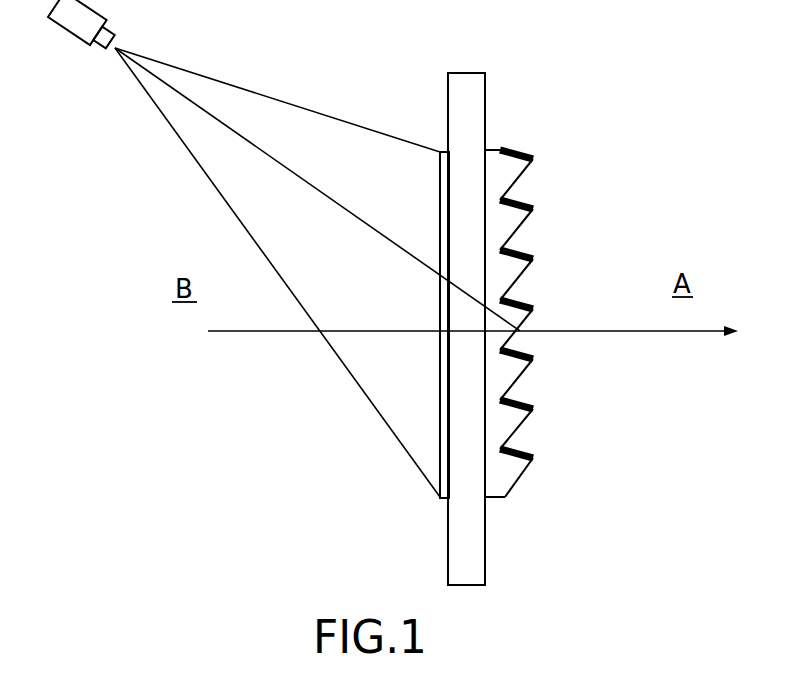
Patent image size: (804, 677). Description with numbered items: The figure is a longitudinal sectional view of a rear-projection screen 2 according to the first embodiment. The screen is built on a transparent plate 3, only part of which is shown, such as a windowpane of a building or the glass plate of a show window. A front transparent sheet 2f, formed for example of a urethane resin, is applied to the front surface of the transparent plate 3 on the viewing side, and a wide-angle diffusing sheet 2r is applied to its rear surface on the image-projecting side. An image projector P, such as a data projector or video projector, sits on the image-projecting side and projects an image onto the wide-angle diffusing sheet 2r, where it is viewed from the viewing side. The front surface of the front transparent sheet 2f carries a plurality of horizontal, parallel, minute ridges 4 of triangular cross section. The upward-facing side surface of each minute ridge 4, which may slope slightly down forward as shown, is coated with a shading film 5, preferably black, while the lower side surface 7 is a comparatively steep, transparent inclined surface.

The image projector P is at (68, 25).
The rear-projection screen 2 is at (501, 302).
The front transparent sheet 2f is at (516, 165).
The wide-angle diffusing sheet 2r is at (440, 439).
The transparent plate 3 is at (468, 87).
The minute ridges 4 is at (546, 304).
The shading film 5 is at (528, 200).
The lower side surface 7 is at (522, 278).